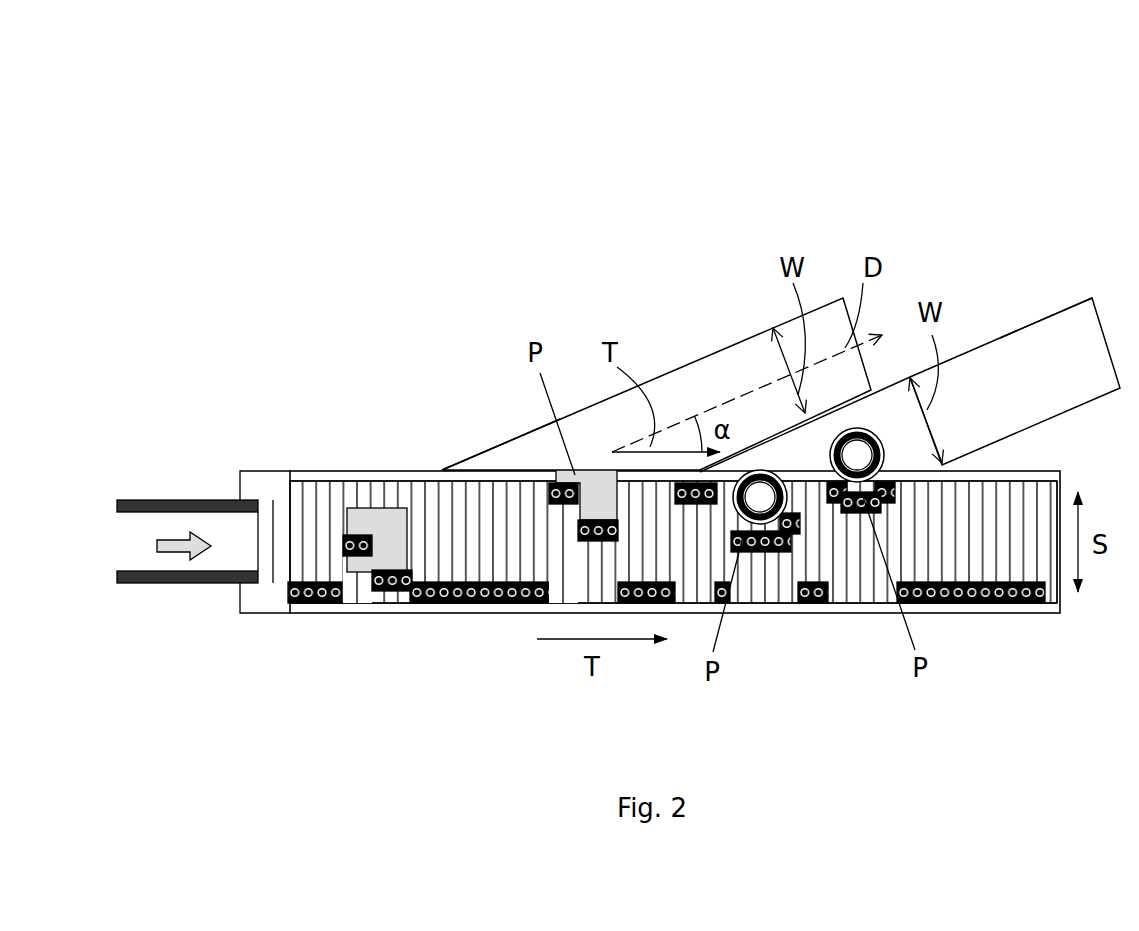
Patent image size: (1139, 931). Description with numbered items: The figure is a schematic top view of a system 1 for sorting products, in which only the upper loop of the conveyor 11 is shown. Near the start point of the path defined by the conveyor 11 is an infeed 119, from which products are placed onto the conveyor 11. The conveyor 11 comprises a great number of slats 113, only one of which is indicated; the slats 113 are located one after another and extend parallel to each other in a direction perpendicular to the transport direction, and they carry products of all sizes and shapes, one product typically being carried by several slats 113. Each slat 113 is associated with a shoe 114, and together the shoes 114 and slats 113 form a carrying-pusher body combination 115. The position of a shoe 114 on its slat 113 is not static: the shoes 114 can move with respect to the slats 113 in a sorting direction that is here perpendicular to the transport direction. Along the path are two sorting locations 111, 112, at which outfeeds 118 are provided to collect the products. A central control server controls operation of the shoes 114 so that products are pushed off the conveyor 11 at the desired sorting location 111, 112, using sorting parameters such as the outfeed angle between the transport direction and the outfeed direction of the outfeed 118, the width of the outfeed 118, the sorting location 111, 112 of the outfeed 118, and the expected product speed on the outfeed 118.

The system 1 is at (960, 177).
The conveyor 11 is at (787, 632).
The sorting location 111 is at (742, 365).
The sorting location 112 is at (1012, 377).
The slat 113 is at (363, 593).
The shoe 114 is at (365, 550).
The carrying-pusher body combination 115 is at (432, 650).
The outfeed 118 is at (1050, 313).
The infeed 119 is at (162, 540).